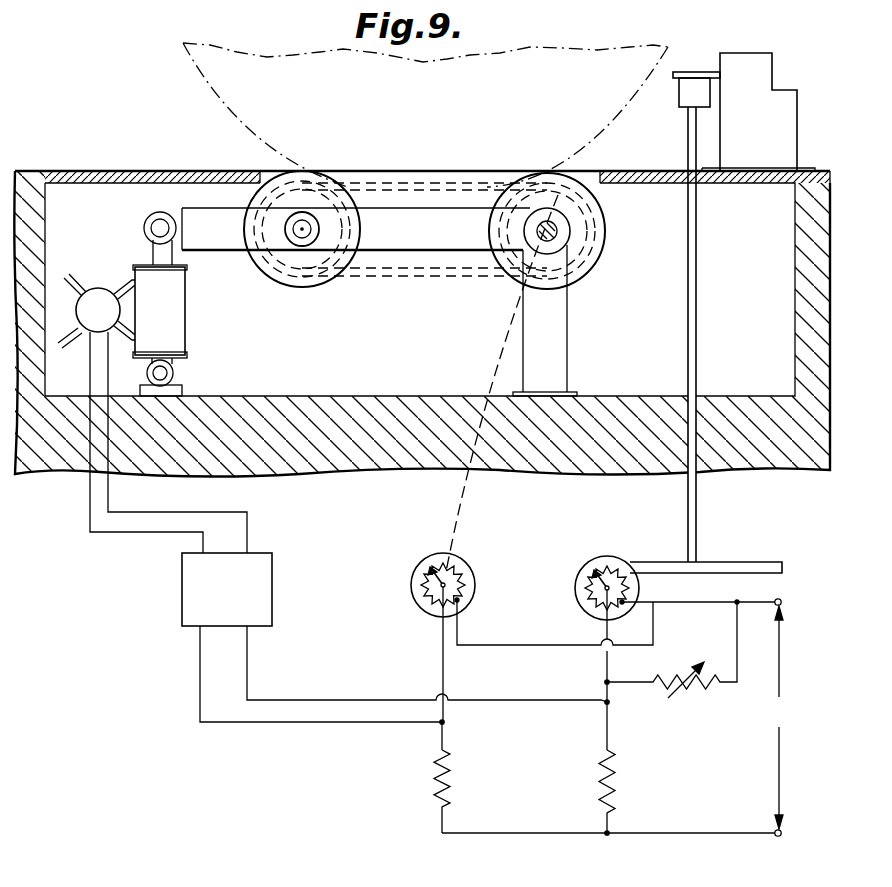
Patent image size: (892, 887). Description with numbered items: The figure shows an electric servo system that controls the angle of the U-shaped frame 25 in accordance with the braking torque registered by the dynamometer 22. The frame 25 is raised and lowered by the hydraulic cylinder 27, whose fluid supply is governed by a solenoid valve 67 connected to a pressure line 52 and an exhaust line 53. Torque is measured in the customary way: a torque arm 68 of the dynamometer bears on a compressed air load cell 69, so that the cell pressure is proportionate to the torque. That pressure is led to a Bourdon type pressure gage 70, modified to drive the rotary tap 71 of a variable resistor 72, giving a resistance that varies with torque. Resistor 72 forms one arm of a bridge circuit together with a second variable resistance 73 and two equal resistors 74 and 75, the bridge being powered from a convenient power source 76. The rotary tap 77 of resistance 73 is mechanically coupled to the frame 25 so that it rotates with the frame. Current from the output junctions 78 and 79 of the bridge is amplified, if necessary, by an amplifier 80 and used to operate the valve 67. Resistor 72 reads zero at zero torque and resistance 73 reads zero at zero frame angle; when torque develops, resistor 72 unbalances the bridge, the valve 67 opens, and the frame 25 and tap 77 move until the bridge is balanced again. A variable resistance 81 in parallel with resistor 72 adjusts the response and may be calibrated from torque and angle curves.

The dynamometer 22 is at (760, 67).
The U-shaped frame 25 is at (432, 220).
The hydraulic cylinder 27 is at (173, 312).
The pressure line 52 is at (68, 275).
The exhaust line 53 is at (69, 350).
The solenoid valve 67 is at (97, 295).
The torque arm 68 is at (688, 72).
The load cell 69 is at (683, 95).
The Bourdon pressure gage 70 is at (660, 635).
The rotary tap 71 is at (582, 595).
The variable resistor 72 is at (638, 586).
The second variable resistance 73 is at (516, 631).
The resistor 74 is at (437, 778).
The resistor 75 is at (612, 781).
The power source 76 is at (616, 717).
The rotary tap 77 is at (421, 592).
The output junction 78 is at (437, 727).
The output junction 79 is at (605, 704).
The amplifier 80 is at (263, 566).
The variable resistance 81 is at (673, 660).